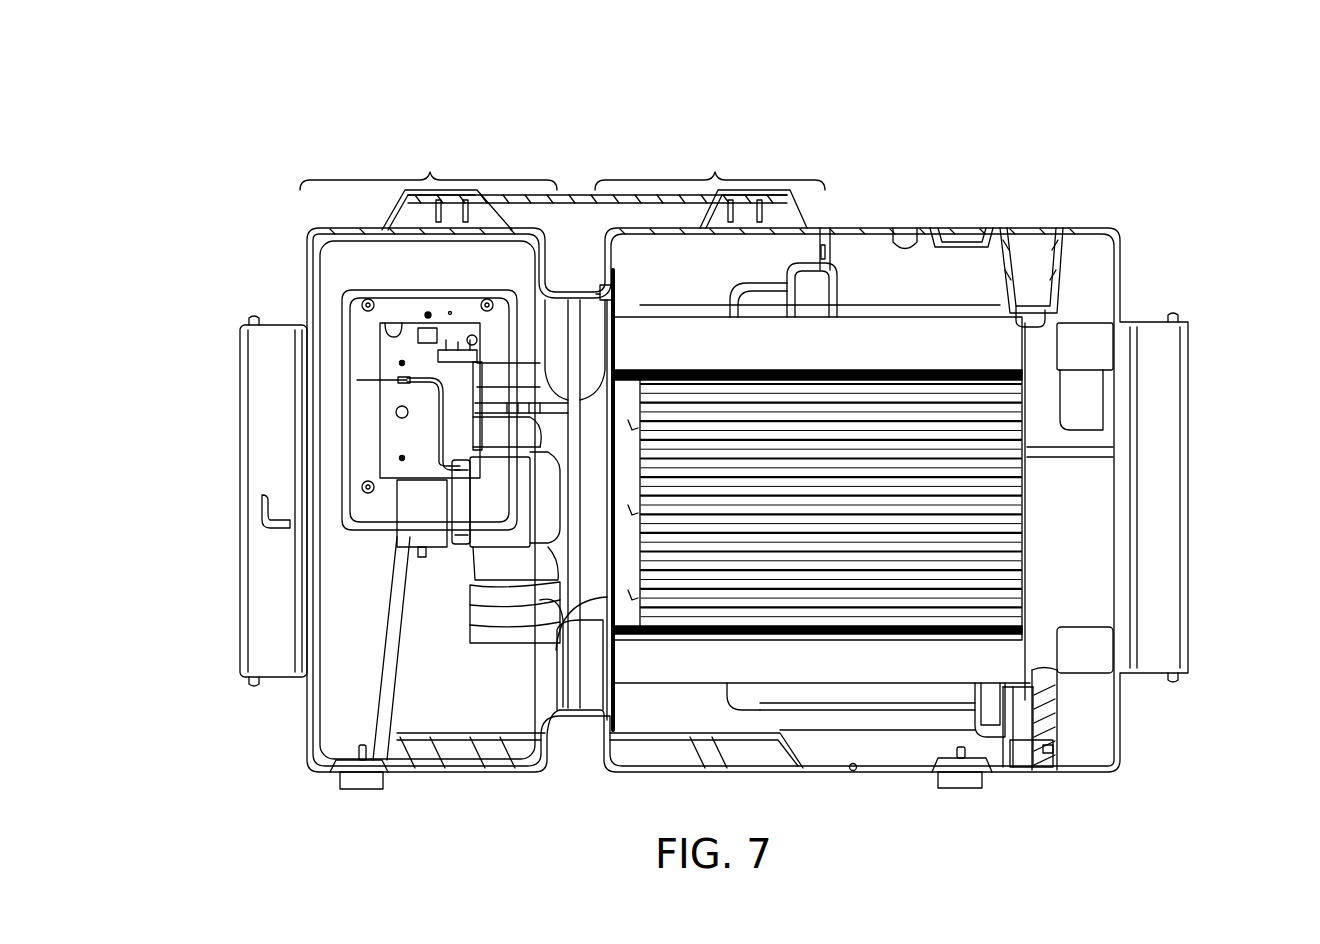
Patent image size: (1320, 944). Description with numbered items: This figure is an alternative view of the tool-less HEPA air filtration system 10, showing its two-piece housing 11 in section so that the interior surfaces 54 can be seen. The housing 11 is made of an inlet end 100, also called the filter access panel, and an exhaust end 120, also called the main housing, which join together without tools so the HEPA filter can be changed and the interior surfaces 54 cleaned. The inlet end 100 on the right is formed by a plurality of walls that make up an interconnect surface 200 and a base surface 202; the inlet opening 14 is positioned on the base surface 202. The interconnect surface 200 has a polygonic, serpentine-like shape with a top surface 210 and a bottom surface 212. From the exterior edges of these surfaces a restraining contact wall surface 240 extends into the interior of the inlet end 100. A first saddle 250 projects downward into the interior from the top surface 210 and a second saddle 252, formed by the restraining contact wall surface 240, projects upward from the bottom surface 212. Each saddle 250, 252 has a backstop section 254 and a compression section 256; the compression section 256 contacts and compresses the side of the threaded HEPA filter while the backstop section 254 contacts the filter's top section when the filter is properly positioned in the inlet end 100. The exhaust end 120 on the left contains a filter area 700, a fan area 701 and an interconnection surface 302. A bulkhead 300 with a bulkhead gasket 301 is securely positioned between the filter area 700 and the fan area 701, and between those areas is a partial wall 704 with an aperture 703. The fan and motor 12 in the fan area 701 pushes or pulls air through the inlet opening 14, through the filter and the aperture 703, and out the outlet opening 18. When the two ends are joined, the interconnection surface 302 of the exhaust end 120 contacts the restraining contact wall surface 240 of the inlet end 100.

The HEPA air filtration system 10 is at (252, 128).
The housing 11 is at (778, 148).
The fan and motor 12 is at (512, 508).
The inlet opening 14 is at (1156, 412).
The outlet opening 18 is at (274, 512).
The interior surfaces 54 is at (915, 250).
The inlet end 100 is at (1200, 598).
The exhaust end 120 is at (650, 148).
The interconnect surface 200 is at (845, 268).
The base surface 202 is at (1146, 290).
The top surface 210 is at (970, 202).
The bottom surface 212 is at (915, 788).
The restraining contact wall surface 240 is at (832, 298).
The first saddle 250 is at (1062, 290).
The second saddle 252 is at (1058, 720).
The backstop section 254 is at (1057, 315).
The compression section 256 is at (1030, 300).
The bulkhead 300 is at (613, 655).
The bulkhead gasket 301 is at (595, 708).
The interconnection surface 302 is at (827, 265).
The filter area 700 is at (710, 184).
The fan area 701 is at (543, 185).
The aperture 703 is at (578, 410).
The partial wall 704 is at (606, 296).